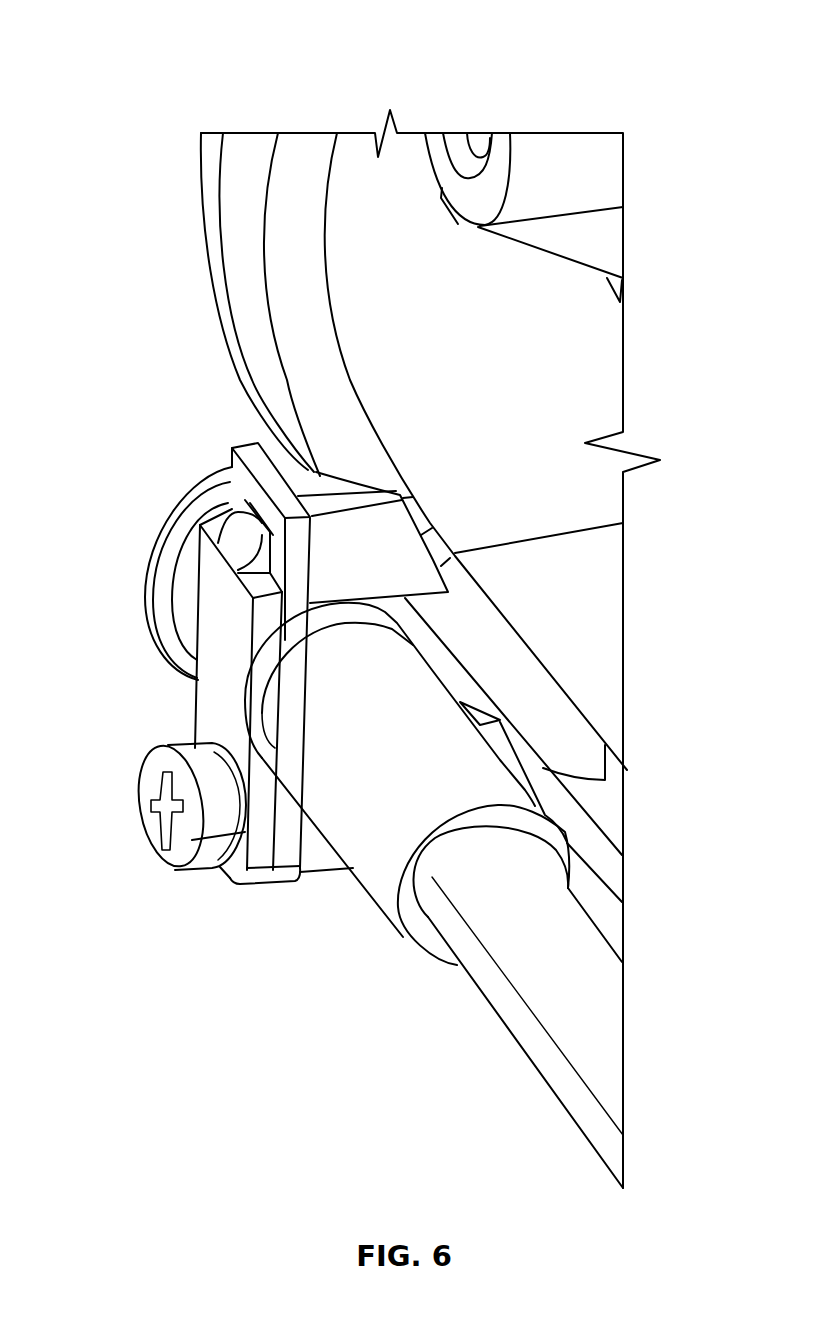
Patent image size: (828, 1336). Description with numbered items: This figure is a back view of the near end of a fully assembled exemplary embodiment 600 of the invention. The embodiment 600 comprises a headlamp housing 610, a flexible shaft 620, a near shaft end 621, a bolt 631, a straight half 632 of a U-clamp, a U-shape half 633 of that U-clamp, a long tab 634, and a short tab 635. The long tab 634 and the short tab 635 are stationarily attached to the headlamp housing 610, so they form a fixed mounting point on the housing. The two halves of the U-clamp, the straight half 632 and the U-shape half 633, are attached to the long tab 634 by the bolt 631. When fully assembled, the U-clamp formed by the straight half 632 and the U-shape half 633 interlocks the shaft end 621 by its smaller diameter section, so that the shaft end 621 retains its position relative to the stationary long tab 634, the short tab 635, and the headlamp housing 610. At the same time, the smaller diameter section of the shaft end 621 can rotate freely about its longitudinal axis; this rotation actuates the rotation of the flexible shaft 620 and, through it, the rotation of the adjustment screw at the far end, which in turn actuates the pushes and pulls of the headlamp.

The exemplary embodiment 600 is at (476, 90).
The headlamp housing 610 is at (537, 357).
The flexible shaft 620 is at (610, 1012).
The near shaft end 621 is at (156, 600).
The bolt 631 is at (145, 803).
The straight half of U-clamp 632 is at (230, 880).
The U-shape half of U-clamp 633 is at (287, 873).
The long tab 634 is at (332, 868).
The short tab 635 is at (295, 470).